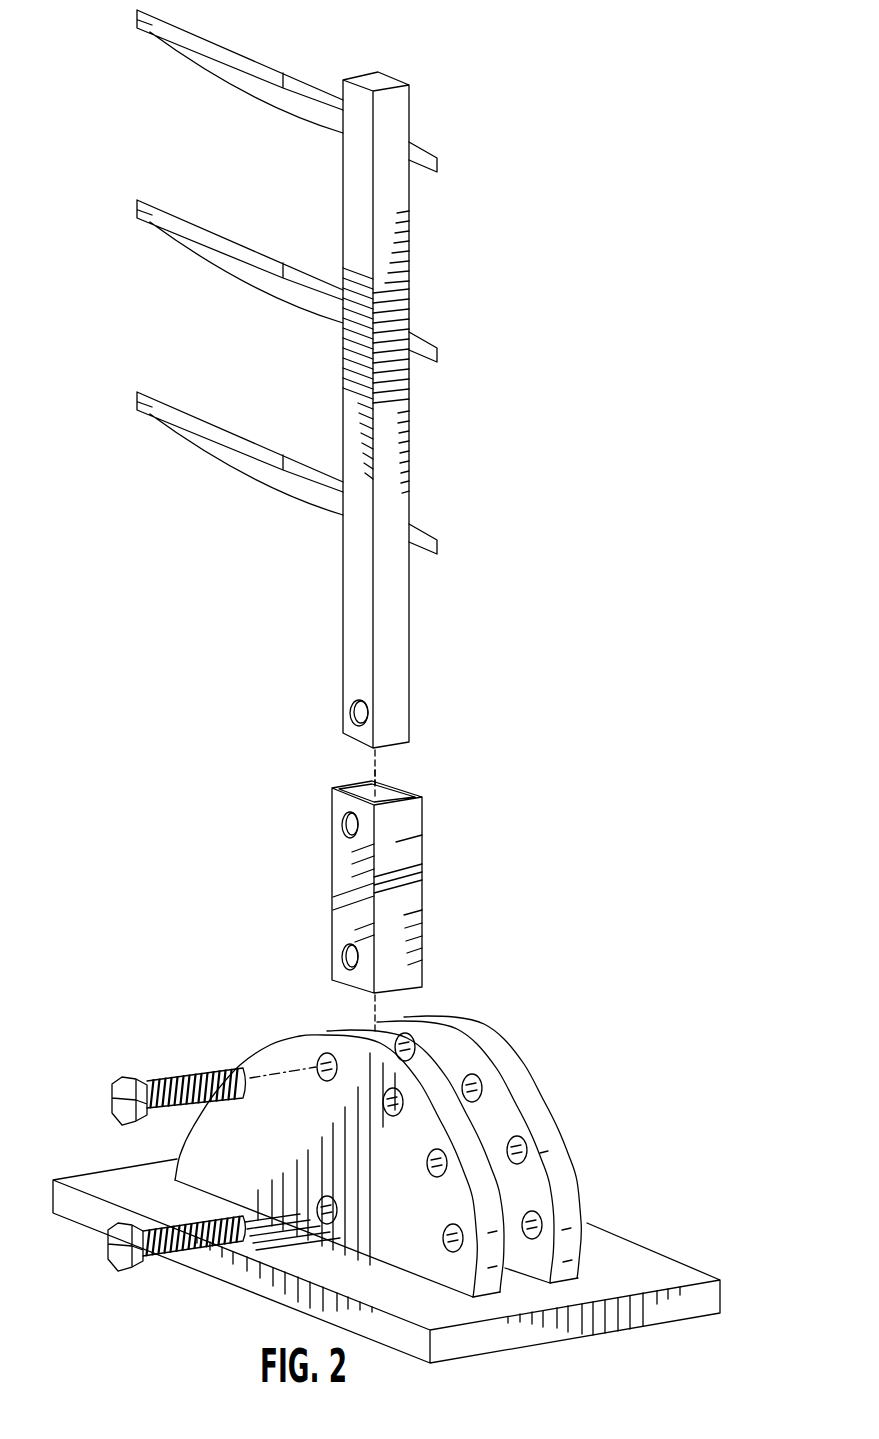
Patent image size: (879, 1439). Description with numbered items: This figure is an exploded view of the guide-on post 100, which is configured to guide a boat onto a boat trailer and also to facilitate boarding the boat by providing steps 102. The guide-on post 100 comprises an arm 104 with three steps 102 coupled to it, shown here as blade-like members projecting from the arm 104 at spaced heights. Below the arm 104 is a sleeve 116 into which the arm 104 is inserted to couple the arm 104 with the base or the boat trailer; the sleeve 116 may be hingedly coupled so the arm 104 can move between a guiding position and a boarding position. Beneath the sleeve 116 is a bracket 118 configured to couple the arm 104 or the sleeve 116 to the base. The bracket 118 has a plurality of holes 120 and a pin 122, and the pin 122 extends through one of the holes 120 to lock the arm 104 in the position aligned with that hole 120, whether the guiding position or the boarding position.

The guide-on post 100 is at (727, 79).
The step 102 is at (137, 18).
The arm 104 is at (393, 227).
The sleeve 116 is at (396, 858).
The bracket 118 is at (213, 1126).
The holes 120 is at (538, 1222).
The pin 122 is at (122, 1097).